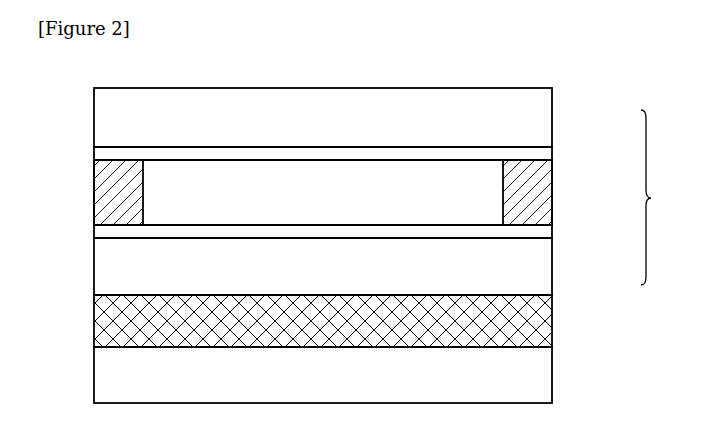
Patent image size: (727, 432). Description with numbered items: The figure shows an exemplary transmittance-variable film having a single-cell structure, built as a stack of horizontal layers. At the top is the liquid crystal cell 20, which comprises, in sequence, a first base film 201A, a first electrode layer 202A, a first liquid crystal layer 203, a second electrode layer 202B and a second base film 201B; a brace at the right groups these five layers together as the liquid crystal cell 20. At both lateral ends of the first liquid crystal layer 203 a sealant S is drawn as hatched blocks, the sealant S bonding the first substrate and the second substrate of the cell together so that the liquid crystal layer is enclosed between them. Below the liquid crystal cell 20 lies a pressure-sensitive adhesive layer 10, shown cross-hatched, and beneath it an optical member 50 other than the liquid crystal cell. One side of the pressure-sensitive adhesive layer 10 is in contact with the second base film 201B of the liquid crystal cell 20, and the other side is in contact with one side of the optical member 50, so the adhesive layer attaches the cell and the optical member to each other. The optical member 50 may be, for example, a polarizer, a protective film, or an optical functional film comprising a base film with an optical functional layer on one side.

The first base film 201A is at (553, 121).
The first electrode layer 202A is at (553, 155).
The first liquid crystal layer 203 is at (475, 187).
The sealant S is at (110, 190).
The second electrode layer 202B is at (553, 232).
The second base film 201B is at (553, 268).
The pressure-sensitive adhesive layer 10 is at (553, 320).
The optical member 50 is at (553, 378).
The liquid crystal cell 20 is at (659, 197).